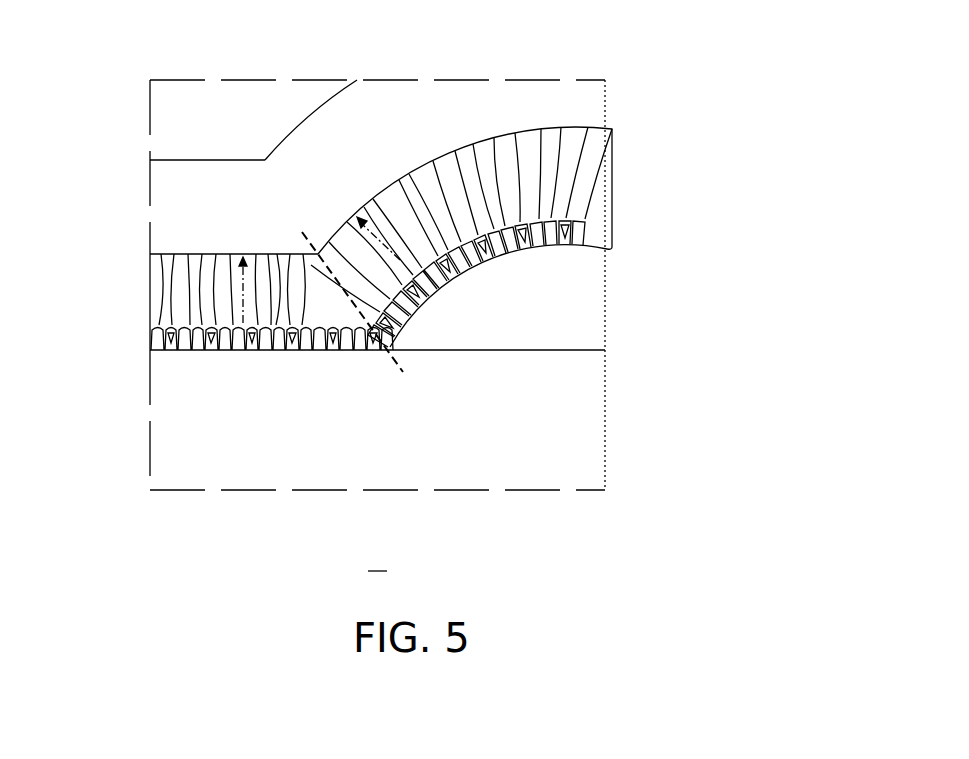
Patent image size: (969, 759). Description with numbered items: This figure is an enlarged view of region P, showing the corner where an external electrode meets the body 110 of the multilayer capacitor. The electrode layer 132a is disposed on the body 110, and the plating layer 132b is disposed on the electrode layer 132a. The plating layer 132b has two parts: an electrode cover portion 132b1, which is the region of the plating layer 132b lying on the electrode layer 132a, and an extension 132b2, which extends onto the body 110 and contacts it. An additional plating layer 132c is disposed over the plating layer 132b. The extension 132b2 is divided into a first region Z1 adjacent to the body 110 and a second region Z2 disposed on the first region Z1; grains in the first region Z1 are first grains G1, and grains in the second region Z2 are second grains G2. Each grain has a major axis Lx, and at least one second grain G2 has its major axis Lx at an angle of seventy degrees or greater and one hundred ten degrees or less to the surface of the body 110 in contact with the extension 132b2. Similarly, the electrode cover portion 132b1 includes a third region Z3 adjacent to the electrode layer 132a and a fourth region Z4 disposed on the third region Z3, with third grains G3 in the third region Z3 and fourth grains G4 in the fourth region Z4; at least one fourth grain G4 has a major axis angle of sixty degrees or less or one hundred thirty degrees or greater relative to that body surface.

The body 110 is at (601, 403).
The electrode layer 132a is at (601, 310).
The plating layer 132b is at (716, 517).
The electrode cover portion 132b1 is at (648, 172).
The extension 132b2 is at (110, 288).
The additional plating layer 132c is at (601, 98).
The first grain G1 is at (173, 353).
The second grain G2 is at (160, 283).
The third grain G3 is at (595, 252).
The fourth grain G4 is at (578, 156).
The first region Z1 is at (146, 327).
The second region Z2 is at (127, 299).
The third region Z3 is at (612, 222).
The fourth region Z4 is at (612, 128).
The major axis of the grain Lx is at (277, 254).
The region P is at (377, 556).